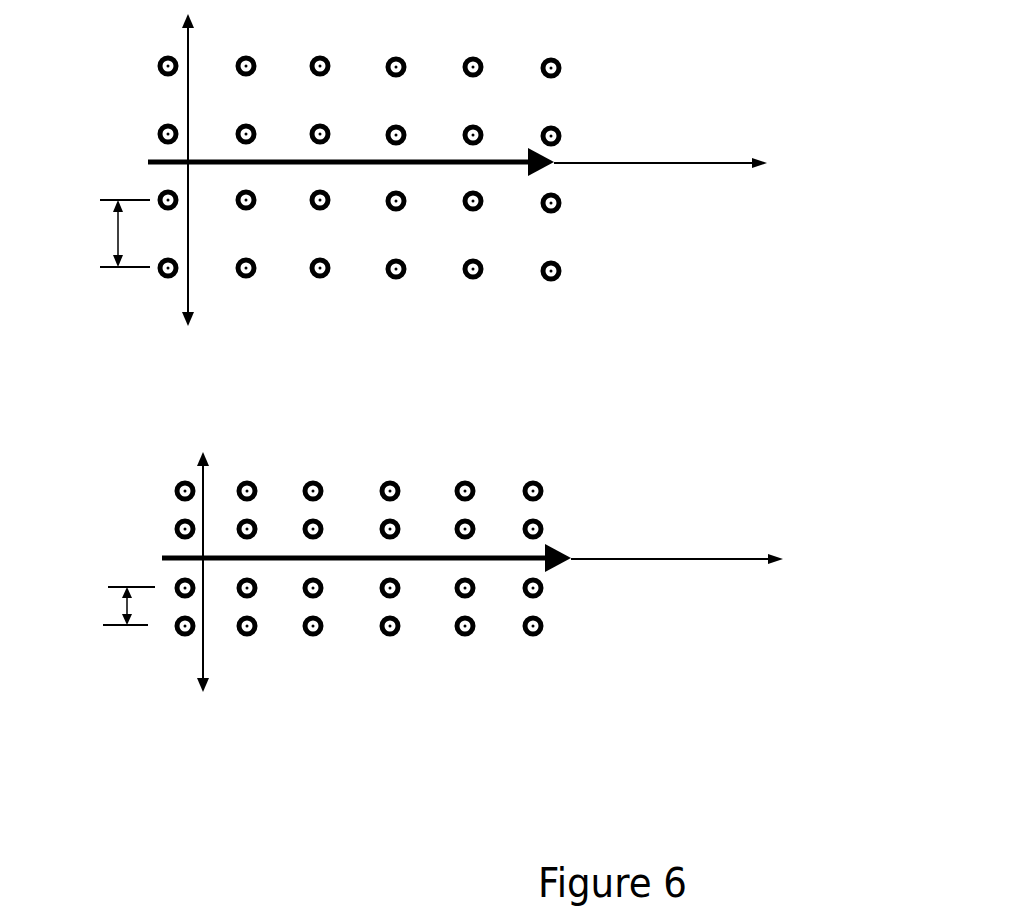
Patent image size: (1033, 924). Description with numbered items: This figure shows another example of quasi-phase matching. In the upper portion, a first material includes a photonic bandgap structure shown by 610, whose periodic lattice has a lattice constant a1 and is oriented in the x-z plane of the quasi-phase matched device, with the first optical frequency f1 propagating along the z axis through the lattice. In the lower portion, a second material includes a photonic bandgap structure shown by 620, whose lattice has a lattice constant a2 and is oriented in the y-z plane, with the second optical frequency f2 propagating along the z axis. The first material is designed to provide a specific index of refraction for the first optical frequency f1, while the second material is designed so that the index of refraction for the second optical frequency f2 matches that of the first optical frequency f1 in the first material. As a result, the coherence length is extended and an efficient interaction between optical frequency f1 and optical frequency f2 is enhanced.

The first material PBG structure 610 is at (472, 170).
The second material PBG structure 620 is at (456, 552).
The first optical frequency f1 is at (290, 128).
The second optical frequency f2 is at (335, 548).
The lattice constant a1 is at (106, 233).
The lattice constant a2 is at (99, 606).